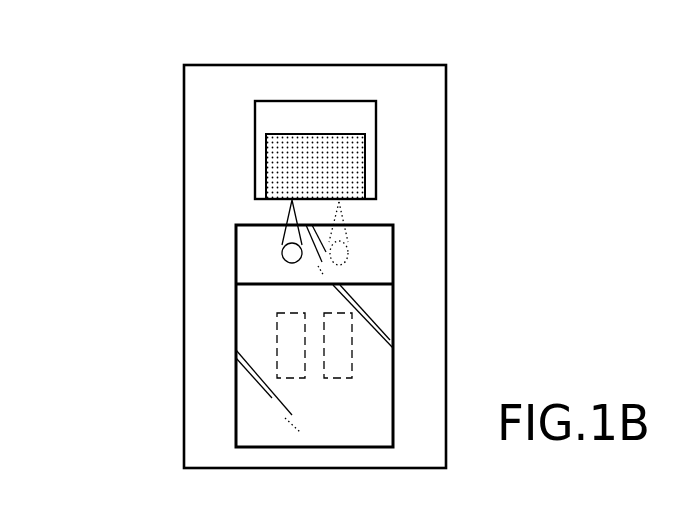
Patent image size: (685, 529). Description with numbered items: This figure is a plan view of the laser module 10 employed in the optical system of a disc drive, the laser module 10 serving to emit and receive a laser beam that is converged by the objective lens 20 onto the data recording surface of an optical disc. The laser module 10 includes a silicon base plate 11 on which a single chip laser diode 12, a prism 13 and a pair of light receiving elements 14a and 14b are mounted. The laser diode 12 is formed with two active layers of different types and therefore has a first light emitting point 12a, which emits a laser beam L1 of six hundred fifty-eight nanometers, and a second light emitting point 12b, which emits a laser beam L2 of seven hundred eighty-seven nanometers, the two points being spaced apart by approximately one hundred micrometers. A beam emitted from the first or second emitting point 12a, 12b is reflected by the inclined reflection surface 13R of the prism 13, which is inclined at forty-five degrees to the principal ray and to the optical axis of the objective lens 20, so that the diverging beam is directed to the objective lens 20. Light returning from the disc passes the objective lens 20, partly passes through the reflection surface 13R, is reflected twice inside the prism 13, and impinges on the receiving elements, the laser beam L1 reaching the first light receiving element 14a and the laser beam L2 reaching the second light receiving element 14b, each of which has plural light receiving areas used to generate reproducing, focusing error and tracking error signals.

The laser module 10 is at (176, 331).
The silicon base plate 11 is at (200, 193).
The single chip laser diode 12 is at (318, 111).
The first light emitting point 12a is at (290, 194).
The second light emitting point 12b is at (338, 193).
The prism 13 is at (252, 402).
The inclined reflection surface 13R is at (375, 230).
The first light receiving element 14a is at (277, 333).
The second light receiving element 14b is at (352, 362).
The laser beam L1 is at (282, 256).
The laser beam L2 is at (348, 256).
The objective lens 20 is at (672, 14).